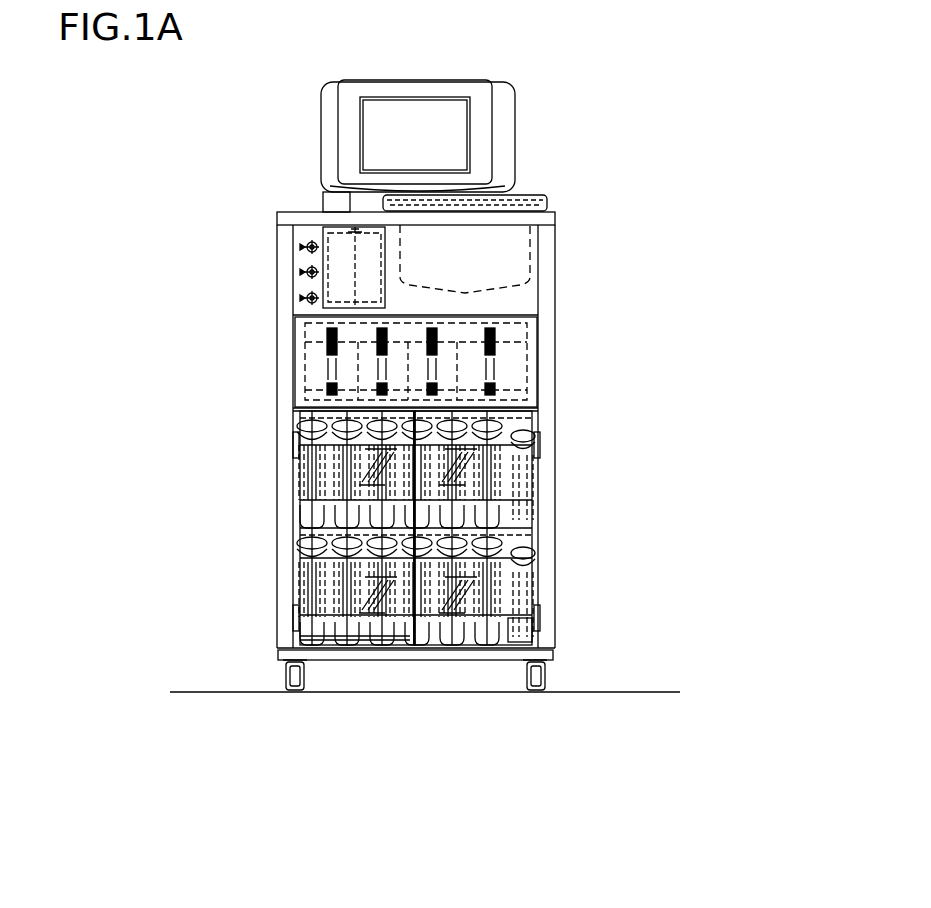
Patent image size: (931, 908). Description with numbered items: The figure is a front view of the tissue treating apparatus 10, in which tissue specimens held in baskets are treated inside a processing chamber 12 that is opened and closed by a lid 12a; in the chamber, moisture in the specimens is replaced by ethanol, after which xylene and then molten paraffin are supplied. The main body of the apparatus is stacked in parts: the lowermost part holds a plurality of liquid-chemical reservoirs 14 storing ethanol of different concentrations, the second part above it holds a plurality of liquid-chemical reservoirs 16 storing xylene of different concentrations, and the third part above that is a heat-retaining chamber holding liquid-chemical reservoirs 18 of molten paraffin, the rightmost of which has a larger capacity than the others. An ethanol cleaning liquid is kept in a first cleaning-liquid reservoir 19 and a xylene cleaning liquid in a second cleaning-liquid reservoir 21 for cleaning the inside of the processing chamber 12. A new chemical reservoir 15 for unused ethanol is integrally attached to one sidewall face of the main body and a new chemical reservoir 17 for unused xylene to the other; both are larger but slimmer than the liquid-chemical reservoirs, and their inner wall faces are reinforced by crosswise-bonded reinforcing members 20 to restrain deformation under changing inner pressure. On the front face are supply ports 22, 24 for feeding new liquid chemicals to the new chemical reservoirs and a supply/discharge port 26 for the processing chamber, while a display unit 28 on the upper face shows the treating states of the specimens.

The tissue treating apparatus 10 is at (657, 126).
The processing chamber 12 is at (531, 262).
The lid 12a is at (523, 192).
The liquid-chemical reservoir 14 is at (330, 642).
The new chemical reservoir 15 is at (293, 538).
The liquid-chemical reservoir 16 is at (300, 466).
The new chemical reservoir 17 is at (548, 538).
The liquid-chemical reservoir 18 is at (315, 355).
The first cleaning-liquid reservoir 19 is at (512, 642).
The reinforcing member 20 is at (295, 442).
The second cleaning-liquid reservoir 21 is at (540, 477).
The supply port 22 is at (300, 272).
The supply port 24 is at (300, 298).
The supply/discharge port 26 is at (300, 247).
The display unit 28 is at (380, 96).